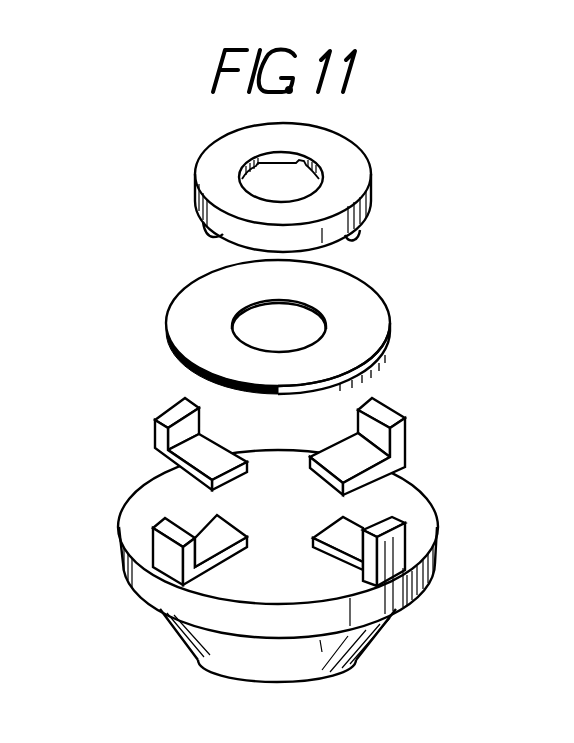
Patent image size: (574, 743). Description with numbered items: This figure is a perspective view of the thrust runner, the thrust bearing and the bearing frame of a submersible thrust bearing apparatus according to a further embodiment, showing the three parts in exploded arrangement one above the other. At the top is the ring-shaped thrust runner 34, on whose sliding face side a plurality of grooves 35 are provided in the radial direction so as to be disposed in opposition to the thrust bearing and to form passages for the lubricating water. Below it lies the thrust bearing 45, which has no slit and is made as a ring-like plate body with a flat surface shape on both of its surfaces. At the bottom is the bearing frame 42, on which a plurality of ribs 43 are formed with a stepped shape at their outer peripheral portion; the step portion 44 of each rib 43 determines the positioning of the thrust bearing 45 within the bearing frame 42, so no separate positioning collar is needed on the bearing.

The thrust runner 34 is at (212, 165).
The groove 35 is at (206, 238).
The thrust bearing 45 is at (184, 310).
The bearing frame 42 is at (122, 549).
The rib 43 is at (360, 452).
The step portion 44 is at (160, 430).